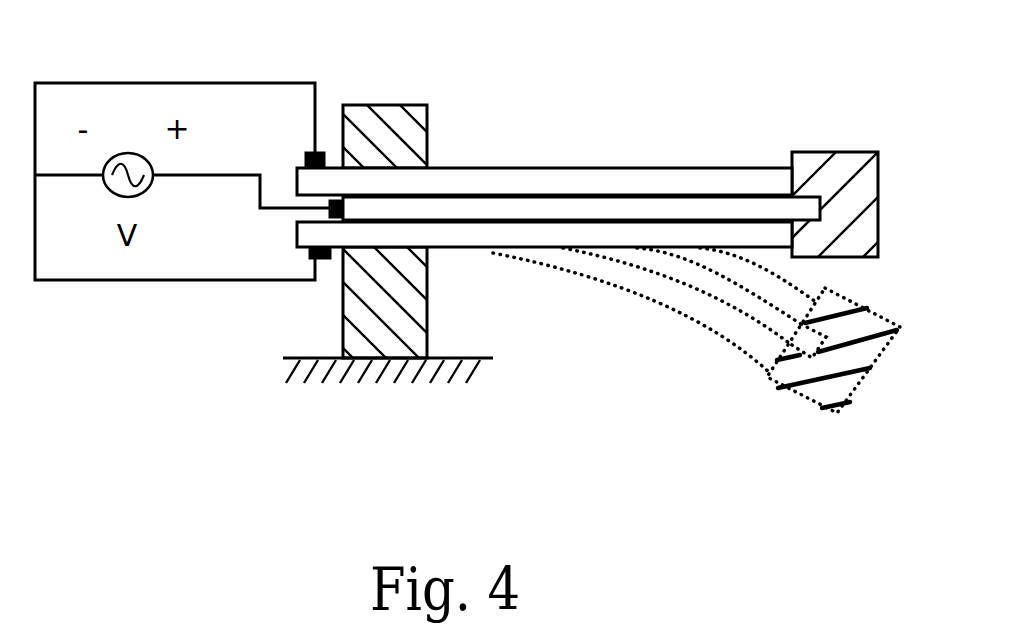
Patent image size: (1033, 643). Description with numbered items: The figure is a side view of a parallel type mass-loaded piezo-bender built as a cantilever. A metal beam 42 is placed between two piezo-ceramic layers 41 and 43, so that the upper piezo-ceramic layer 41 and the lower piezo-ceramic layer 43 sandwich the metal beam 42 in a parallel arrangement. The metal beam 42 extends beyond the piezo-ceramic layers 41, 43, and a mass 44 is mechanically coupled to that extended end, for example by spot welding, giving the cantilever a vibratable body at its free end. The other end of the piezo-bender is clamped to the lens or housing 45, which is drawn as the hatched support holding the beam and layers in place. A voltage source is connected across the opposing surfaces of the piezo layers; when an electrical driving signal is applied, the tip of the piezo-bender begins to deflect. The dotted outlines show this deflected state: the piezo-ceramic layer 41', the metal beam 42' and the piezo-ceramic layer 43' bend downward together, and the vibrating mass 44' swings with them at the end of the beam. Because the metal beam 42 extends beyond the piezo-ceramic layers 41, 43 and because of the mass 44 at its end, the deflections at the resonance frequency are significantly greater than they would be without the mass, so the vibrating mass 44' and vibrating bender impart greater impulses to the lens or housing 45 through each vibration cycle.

The piezo-ceramic layer 41 is at (544, 120).
The metal beam 42 is at (581, 147).
The piezo-ceramic layer 43 is at (544, 140).
The mass 44 is at (849, 154).
The lens or housing 45 is at (288, 377).
The piezo-ceramic layer in deflected position 41' is at (726, 355).
The metal beam in deflected position 42' is at (676, 333).
The piezo-ceramic layer in deflected position 43' is at (631, 335).
The vibrating mass 44' is at (834, 376).